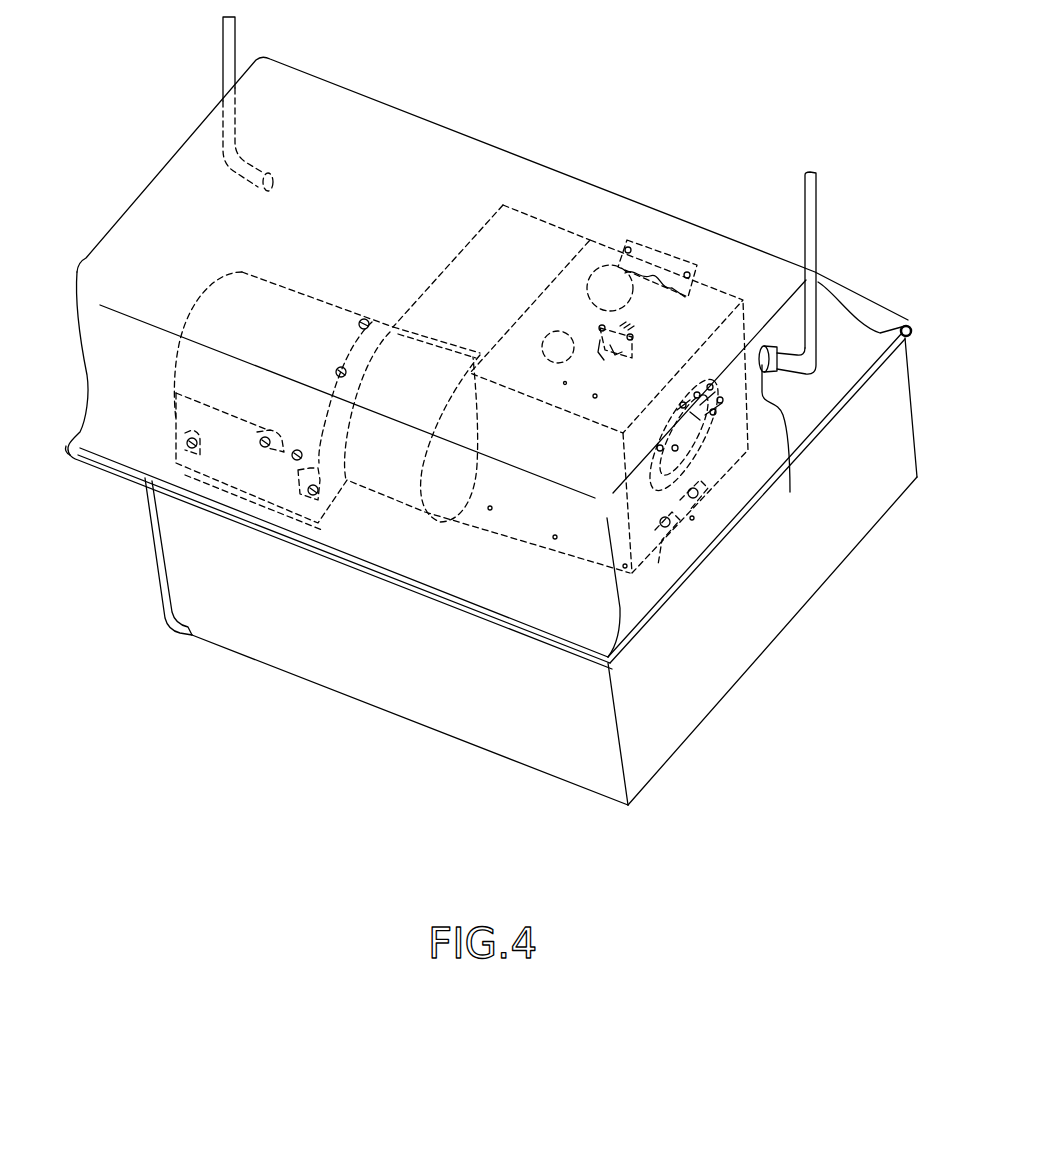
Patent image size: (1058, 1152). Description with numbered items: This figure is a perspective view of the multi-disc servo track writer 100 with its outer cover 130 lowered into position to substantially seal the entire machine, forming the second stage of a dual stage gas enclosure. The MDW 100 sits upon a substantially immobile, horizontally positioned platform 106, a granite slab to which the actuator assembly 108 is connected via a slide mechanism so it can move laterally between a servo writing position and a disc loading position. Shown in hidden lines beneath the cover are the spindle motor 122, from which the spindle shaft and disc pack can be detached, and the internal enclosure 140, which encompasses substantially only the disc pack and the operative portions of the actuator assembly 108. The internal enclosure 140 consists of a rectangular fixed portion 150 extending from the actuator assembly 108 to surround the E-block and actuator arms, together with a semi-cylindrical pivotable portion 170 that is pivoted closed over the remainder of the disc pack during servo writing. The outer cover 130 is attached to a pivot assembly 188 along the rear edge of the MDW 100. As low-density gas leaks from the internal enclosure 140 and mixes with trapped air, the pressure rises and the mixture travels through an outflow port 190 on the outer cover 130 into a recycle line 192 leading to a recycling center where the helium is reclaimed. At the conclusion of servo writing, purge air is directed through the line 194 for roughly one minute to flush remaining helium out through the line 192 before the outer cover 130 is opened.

The multi-disc servo track writer 100 is at (496, 410).
The platform 106 is at (713, 685).
The actuator assembly 108 is at (712, 296).
The spindle motor 122 is at (313, 297).
The outer cover 130 is at (390, 113).
The internal enclosure 140 is at (487, 252).
The fixed portion 150 is at (533, 226).
The pivotable portion 170 is at (404, 494).
The pivot assembly 188 is at (908, 327).
The outflow port 190 is at (789, 448).
The recycle line 192 is at (816, 202).
The purge line 194 is at (232, 33).